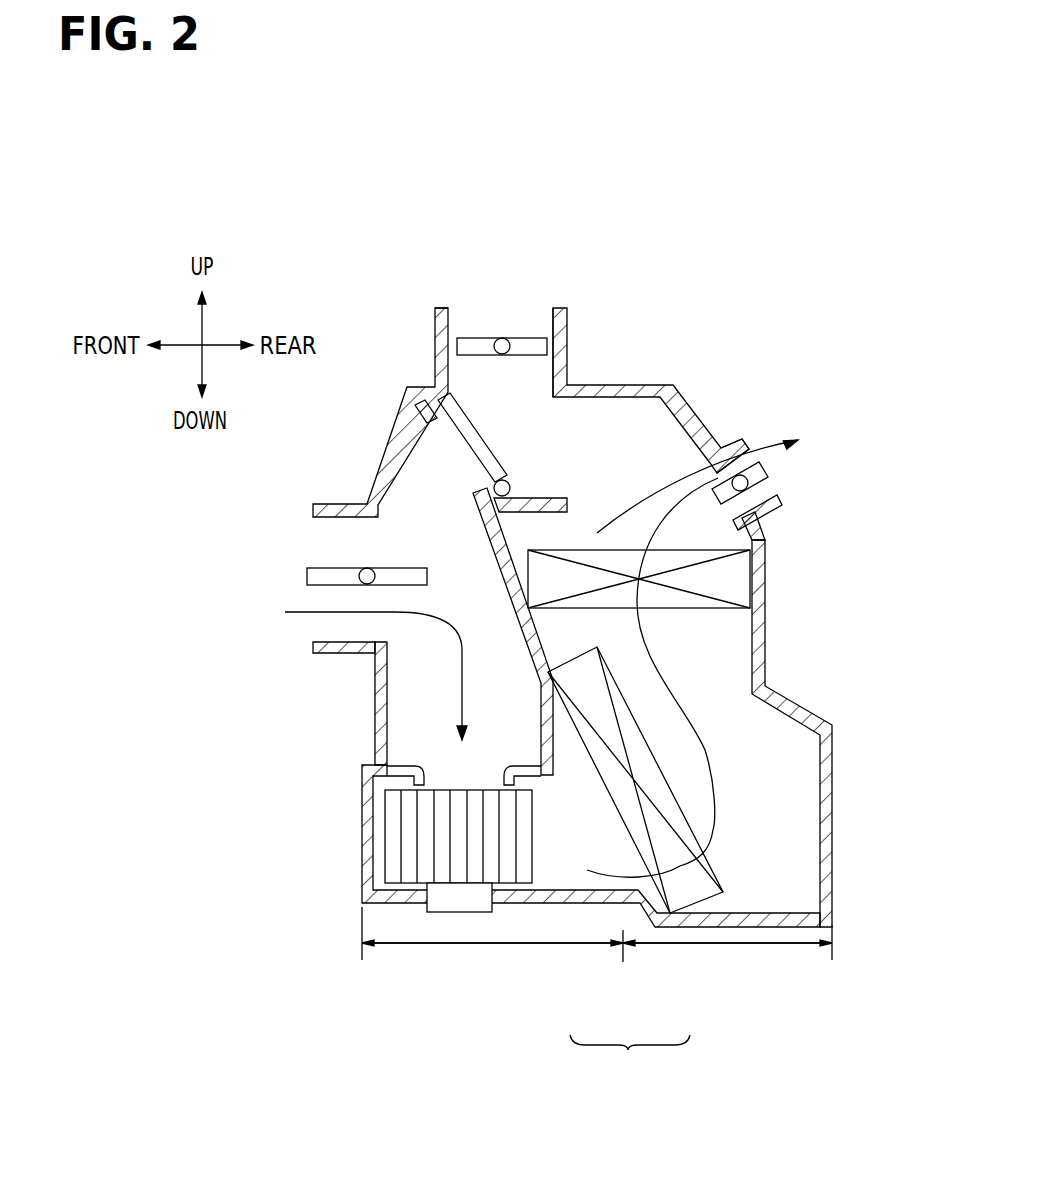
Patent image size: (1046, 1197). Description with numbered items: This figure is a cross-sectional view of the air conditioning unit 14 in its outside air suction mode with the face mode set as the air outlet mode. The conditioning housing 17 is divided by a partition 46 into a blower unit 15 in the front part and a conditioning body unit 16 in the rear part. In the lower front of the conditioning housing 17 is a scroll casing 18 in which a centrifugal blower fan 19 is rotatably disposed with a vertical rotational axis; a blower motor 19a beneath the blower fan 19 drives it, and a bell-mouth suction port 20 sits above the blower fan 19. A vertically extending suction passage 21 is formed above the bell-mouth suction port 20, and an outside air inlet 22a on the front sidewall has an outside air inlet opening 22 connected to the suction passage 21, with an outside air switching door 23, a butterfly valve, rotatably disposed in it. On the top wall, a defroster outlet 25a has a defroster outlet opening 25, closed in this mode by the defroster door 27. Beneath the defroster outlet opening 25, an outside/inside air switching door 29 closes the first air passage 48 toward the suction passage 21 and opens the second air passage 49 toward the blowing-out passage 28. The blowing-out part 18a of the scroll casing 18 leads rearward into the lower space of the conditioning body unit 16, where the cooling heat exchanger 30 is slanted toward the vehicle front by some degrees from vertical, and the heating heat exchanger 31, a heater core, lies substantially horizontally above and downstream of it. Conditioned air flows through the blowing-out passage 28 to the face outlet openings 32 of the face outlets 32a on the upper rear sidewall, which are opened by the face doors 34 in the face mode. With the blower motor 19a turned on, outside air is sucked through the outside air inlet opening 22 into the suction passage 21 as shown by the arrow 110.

The air conditioning unit 14 is at (597, 993).
The blower unit 15 is at (493, 945).
The conditioning body unit 16 is at (727, 945).
The conditioning housing 17 is at (765, 639).
The scroll casing 18 is at (365, 840).
The blowing-out part 18a is at (580, 827).
The centrifugal blower fan 19 is at (400, 807).
The blower motor 19a is at (443, 907).
The bell-mouth suction port 20 is at (453, 773).
The suction passage 21 is at (438, 690).
The outside air inlet opening 22 is at (375, 541).
The outside air inlet 22a is at (313, 649).
The outside air switching door 23 is at (325, 575).
The defroster outlet opening 25 is at (463, 323).
The defroster outlet 25a is at (567, 326).
The defroster door 27 is at (530, 340).
The blowing-out passage 28 is at (630, 468).
The outside/inside air switching door 29 is at (450, 430).
The cooling heat exchanger 30 is at (650, 783).
The heating heat exchanger 31 is at (733, 580).
The face outlet openings 32 is at (753, 497).
The face outlets 32a is at (776, 508).
The face doors 34 is at (767, 472).
The partition 46 is at (690, 440).
The first air passage 48 is at (447, 453).
The second air passage 49 is at (550, 433).
The arrow 110 is at (300, 612).